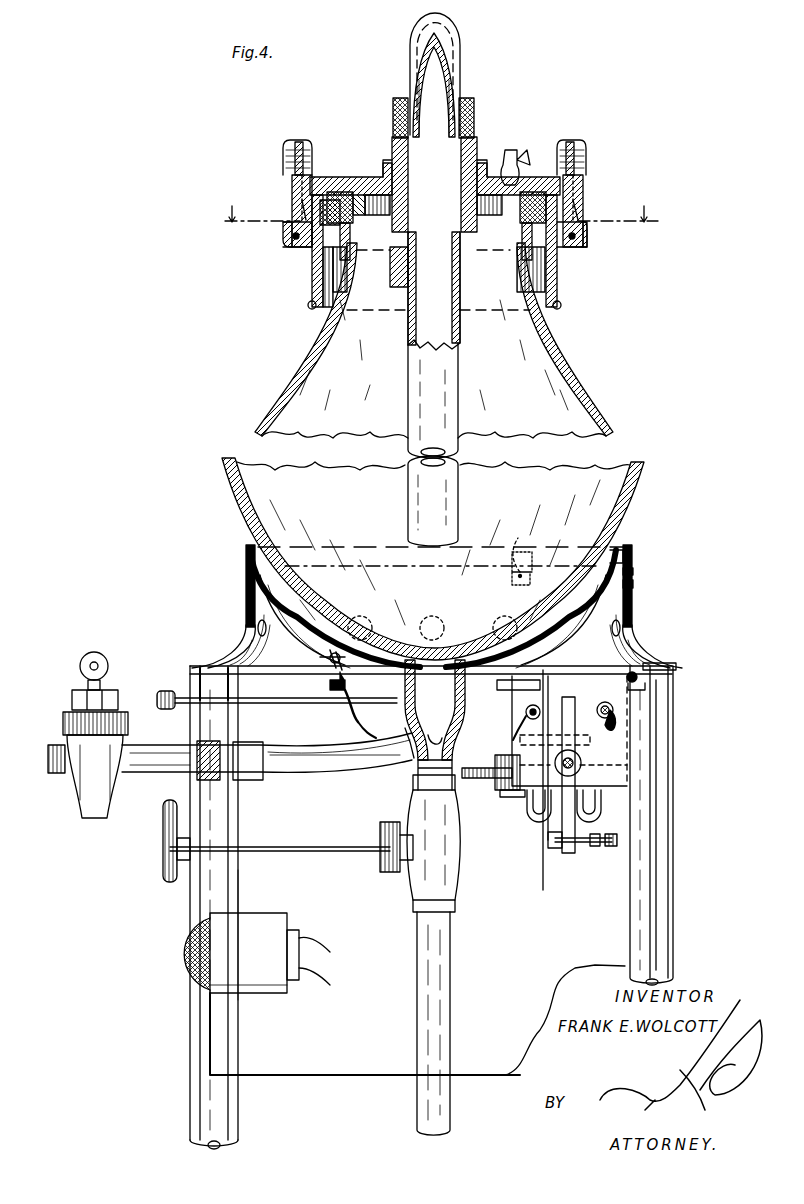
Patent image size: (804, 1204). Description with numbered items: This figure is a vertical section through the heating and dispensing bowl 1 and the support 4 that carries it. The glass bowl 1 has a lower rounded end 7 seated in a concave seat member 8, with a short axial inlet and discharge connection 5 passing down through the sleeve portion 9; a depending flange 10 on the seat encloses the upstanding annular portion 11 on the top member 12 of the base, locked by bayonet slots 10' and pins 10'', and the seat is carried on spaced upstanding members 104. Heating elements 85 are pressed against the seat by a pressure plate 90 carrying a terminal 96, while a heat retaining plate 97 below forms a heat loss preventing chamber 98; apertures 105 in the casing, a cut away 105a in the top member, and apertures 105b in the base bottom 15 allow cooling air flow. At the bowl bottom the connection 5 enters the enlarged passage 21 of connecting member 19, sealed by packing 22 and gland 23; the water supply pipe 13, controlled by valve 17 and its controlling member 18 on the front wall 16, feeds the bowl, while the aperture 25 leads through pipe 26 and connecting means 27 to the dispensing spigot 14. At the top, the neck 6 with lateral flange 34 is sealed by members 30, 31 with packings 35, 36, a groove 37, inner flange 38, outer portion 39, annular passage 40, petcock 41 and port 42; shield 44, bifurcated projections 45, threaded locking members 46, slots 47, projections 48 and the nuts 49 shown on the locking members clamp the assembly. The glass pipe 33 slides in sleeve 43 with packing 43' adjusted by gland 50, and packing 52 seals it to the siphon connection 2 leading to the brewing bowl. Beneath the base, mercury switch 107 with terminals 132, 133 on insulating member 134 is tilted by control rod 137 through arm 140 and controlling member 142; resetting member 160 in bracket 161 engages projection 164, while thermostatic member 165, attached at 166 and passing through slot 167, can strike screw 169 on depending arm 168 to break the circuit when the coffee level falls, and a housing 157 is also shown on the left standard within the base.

The heating and dispensing bowl 1 is at (640, 488).
The connection 2 is at (462, 28).
The support 4 is at (192, 672).
The inlet and discharge connection 5 is at (455, 730).
The neck or mouth 6 is at (345, 250).
The lower rounded end 7 is at (262, 590).
The seat member 8 is at (630, 555).
The sleeve portion 9 is at (370, 668).
The flange 10 is at (641, 554).
The bayonet slots 10' is at (649, 583).
The pins 10'' is at (654, 565).
The annular portion 11 is at (632, 648).
The top member 12 is at (246, 655).
The water supply pipe 13 is at (450, 1002).
The dispensing spigot or faucet 14 is at (64, 715).
The bottom 15 is at (493, 1075).
The front wall 16 is at (215, 900).
The controlling valve 17 is at (455, 845).
The controlling member 18 is at (165, 860).
The connecting member 19 is at (395, 762).
The enlarged passage 21 is at (442, 745).
The packing 22 is at (404, 703).
The packing adjusting gland 23 is at (390, 690).
The aperture 25 is at (416, 765).
The pipe 26 is at (348, 772).
The connecting means 27 is at (200, 780).
The top member 30 is at (333, 200).
The clamping member 31 is at (313, 250).
The pipe 33 is at (460, 370).
The lateral flange 34 is at (528, 200).
The packing member 35 is at (355, 200).
The packing member 36 is at (318, 212).
The packing containing groove 37 is at (340, 180).
The depending inner flange 38 is at (372, 205).
The outer depending portion 39 is at (330, 195).
The annular passage 40 is at (487, 200).
The petcock 41 is at (512, 160).
The port 42 is at (495, 200).
The packing housing sleeve 43 is at (359, 269).
The packing 43' is at (394, 278).
The shield 44 is at (325, 275).
The bifurcated projections 45 is at (285, 245).
The threaded locking members 46 is at (295, 205).
The slots 47 is at (290, 180).
The projections 48 is at (292, 185).
The nut 49 is at (288, 143).
The packing gland 50 is at (472, 160).
The packing member 52 is at (415, 74).
The heating elements 85 is at (325, 640).
The pressure plate 90 is at (246, 595).
The terminal 96 is at (338, 688).
The heat retaining plate 97 is at (295, 665).
The heat loss preventing chamber 98 is at (332, 665).
The upstanding members 104 is at (255, 553).
The apertures 105 is at (256, 626).
The cut away 105a is at (530, 640).
The apertures 105b is at (315, 1075).
The switch 107 is at (628, 758).
The terminal 132 is at (620, 750).
The terminal 133 is at (530, 785).
The insulating member 134 is at (630, 716).
The control rod 137 is at (582, 770).
The arm 140 is at (492, 778).
The controlling member 142 is at (505, 797).
The motor housing 157 is at (188, 970).
The resetting member 160 is at (196, 680).
The bracket 161 is at (500, 690).
The upstanding projection 164 is at (572, 704).
The thermostatic member 165 is at (548, 688).
The attachment 166 is at (630, 676).
The slot 167 is at (548, 670).
The depending arm 168 is at (566, 848).
The adjustable screw 169 is at (590, 846).